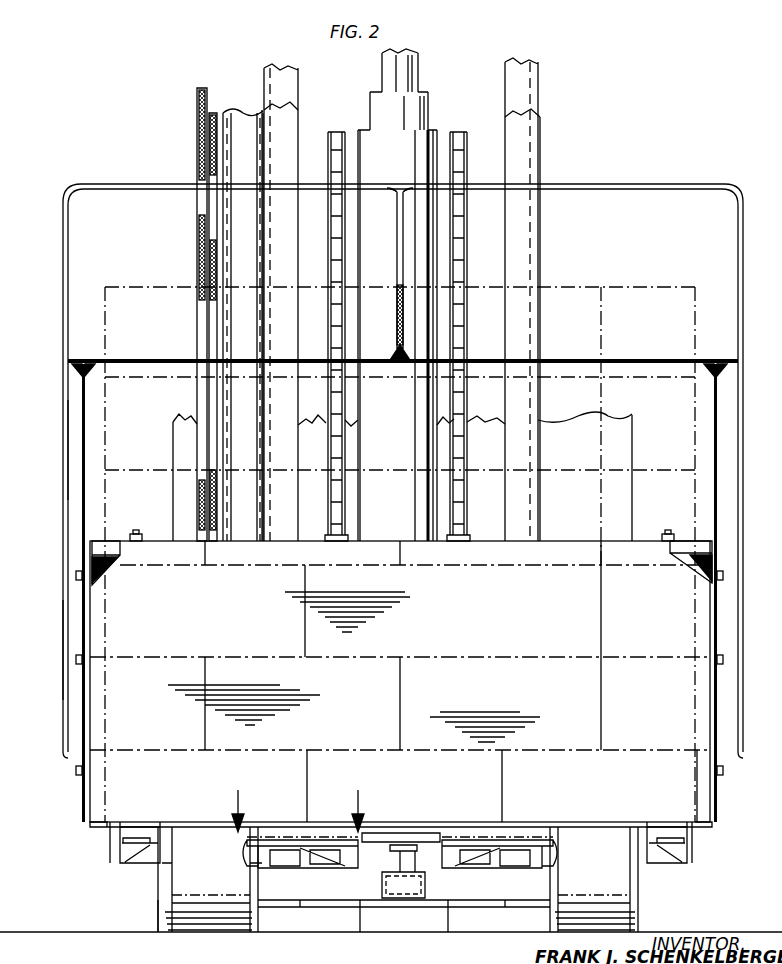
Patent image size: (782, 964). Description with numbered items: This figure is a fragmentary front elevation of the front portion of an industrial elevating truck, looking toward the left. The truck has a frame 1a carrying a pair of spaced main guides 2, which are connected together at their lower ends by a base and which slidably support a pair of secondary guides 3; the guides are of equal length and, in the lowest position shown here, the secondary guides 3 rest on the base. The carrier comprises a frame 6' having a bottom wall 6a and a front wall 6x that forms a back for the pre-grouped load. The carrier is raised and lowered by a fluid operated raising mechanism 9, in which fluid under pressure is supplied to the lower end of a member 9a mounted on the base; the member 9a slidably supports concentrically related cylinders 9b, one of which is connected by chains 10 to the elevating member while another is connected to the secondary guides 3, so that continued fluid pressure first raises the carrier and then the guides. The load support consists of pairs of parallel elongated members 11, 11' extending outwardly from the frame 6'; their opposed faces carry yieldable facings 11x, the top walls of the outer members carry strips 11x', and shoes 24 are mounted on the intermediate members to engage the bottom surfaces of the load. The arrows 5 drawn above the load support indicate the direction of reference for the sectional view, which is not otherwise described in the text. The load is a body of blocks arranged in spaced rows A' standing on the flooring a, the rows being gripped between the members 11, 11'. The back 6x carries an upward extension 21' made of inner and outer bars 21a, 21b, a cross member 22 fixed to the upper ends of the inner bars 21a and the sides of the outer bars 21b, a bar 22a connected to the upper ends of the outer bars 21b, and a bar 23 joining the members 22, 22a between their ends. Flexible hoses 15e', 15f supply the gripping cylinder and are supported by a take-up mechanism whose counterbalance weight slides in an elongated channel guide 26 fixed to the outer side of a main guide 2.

The frame 1a is at (620, 444).
The main guides 2 is at (288, 122).
The secondary guides 3 is at (290, 90).
The direction arrow 5 is at (297, 800).
The frame 6' is at (400, 657).
The bottom wall 6a is at (100, 830).
The front wall 6x is at (144, 580).
The raising mechanism 9 is at (386, 514).
The member 9a is at (390, 856).
The cylinders 9b is at (392, 102).
The chains 10 is at (346, 448).
The load engaging member 11 is at (389, 879).
The load engaging member 11' is at (212, 864).
The facings 11x is at (427, 865).
The strips 11x' is at (403, 822).
The pipe 15e' is at (183, 327).
The outer section 15f is at (200, 220).
The extension 21' is at (45, 450).
The inner bars 21a is at (84, 428).
The outer bars 21b is at (62, 478).
The cross member 22 is at (162, 366).
The bar 22a is at (150, 192).
The bar 23 is at (396, 250).
The shoes 24 is at (308, 880).
The guide 26 is at (228, 126).
The flooring a is at (72, 936).
The rows A' is at (128, 930).